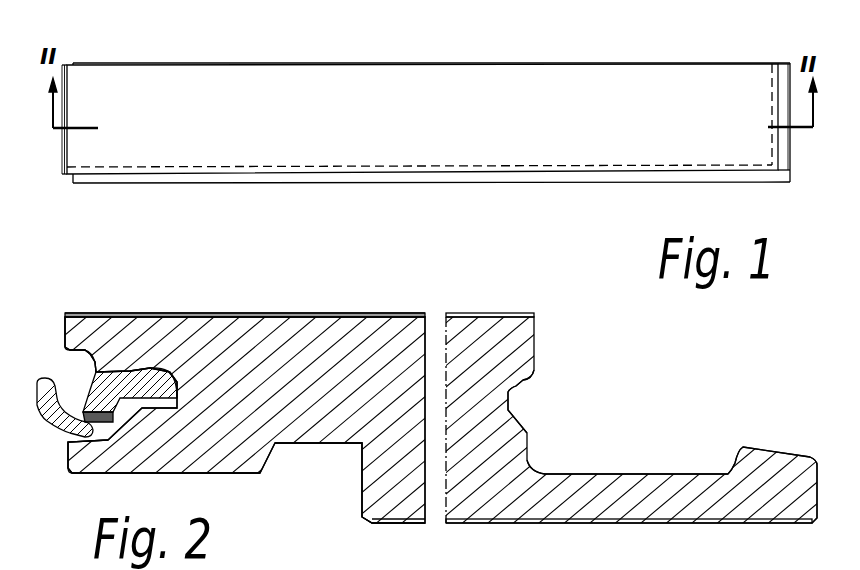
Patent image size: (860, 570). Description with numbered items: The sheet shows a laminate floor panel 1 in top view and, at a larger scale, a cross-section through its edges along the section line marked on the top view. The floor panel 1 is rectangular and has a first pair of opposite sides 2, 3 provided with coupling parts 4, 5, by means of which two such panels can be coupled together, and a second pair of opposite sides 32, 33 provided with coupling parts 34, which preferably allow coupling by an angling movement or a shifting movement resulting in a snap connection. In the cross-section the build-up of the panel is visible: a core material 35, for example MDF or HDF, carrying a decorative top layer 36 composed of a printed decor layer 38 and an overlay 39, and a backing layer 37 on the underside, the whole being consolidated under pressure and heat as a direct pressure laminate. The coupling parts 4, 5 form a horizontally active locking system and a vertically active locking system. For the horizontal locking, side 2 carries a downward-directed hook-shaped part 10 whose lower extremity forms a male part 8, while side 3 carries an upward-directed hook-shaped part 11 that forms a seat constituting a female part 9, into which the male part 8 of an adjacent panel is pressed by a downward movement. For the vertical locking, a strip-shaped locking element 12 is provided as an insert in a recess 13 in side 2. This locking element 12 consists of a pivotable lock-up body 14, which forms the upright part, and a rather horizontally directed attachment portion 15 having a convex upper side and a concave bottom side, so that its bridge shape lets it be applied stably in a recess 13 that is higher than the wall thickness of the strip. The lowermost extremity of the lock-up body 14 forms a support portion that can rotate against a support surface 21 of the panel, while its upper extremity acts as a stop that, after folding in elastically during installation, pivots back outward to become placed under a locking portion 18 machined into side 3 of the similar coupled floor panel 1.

In FIG. 1, the floor panel 1 is at (358, 56).
In FIG. 2, the floor panel 1 is at (282, 298).
In FIG. 1, the side 2 is at (63, 138).
In FIG. 2, the side 2 is at (74, 498).
In FIG. 1, the side 3 is at (789, 87).
In FIG. 2, the side 3 is at (722, 330).
In FIG. 1, the coupling part 4 is at (62, 85).
In FIG. 2, the coupling part 4 is at (46, 334).
In FIG. 1, the coupling part 5 is at (785, 140).
In FIG. 2, the coupling part 5 is at (730, 380).
In FIG. 2, the male part 8 is at (200, 378).
In FIG. 2, the female part 9 is at (650, 497).
In FIG. 2, the hook-shaped part 10 is at (203, 462).
In FIG. 2, the hook-shaped part 11 is at (768, 482).
In FIG. 2, the locking element 12 is at (89, 368).
In FIG. 2, the recess 13 is at (118, 370).
In FIG. 2, the lock-up body 14 is at (47, 440).
In FIG. 2, the attachment portion 15 is at (166, 372).
In FIG. 2, the locking portion 18 is at (520, 379).
In FIG. 2, the support surface 21 is at (82, 440).
In FIG. 1, the side 32 is at (507, 64).
In FIG. 1, the side 33 is at (470, 178).
In FIG. 1, the coupling parts 34 is at (542, 64).
In FIG. 2, the core material 35 is at (368, 462).
In FIG. 2, the top layer 36 is at (548, 318).
In FIG. 2, the backing layer 37 is at (548, 525).
In FIG. 2, the decor layer 38 is at (338, 313).
In FIG. 2, the overlay 39 is at (416, 313).